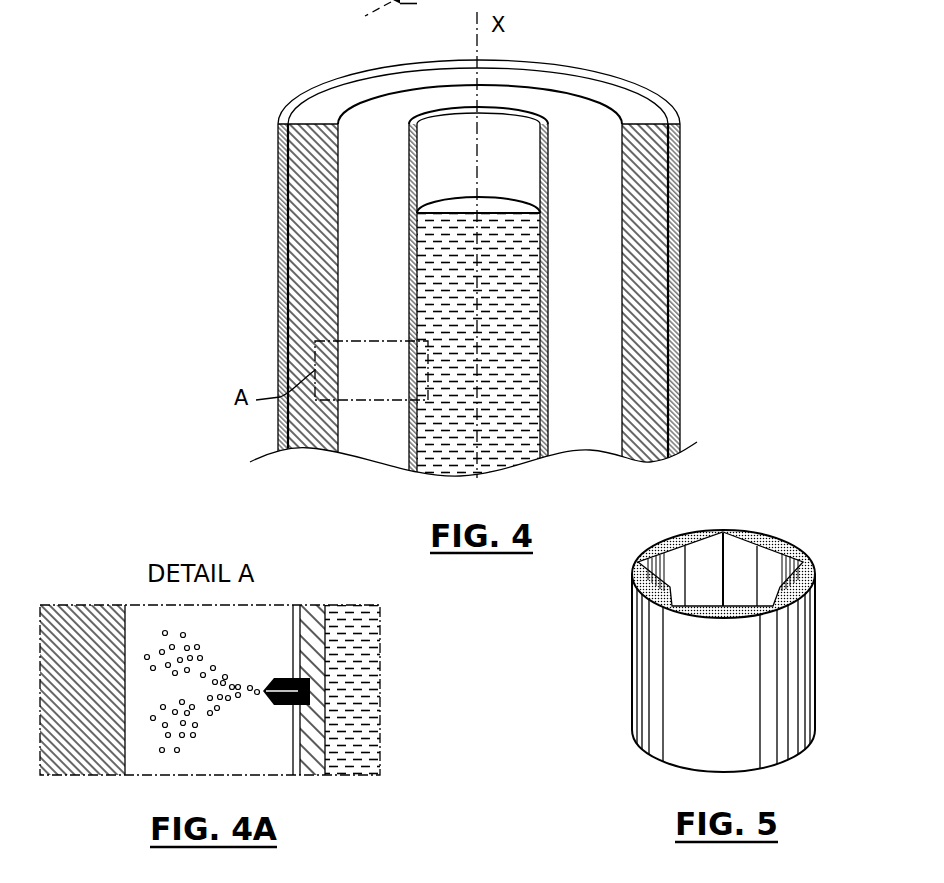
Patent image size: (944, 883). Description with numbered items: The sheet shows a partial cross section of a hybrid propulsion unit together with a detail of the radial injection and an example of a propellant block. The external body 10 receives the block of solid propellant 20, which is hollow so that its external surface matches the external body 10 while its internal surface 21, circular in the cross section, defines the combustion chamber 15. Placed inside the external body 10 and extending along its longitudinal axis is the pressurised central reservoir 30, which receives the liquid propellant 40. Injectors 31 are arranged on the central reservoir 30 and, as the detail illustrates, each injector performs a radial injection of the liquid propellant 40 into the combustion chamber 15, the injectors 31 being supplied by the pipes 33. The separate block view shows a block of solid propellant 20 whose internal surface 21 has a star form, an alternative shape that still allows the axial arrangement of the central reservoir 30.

In FIG. 4, the external body 10 is at (479, 270).
In FIG. 4, the combustion chamber 15 is at (378, 8).
In FIG. 4A, the combustion chamber 15 is at (280, 639).
In FIG. 4, the solid propellant 20 is at (479, 274).
In FIG. 5, the solid propellant 20 is at (632, 660).
In FIG. 4, the internal surface 21 is at (480, 104).
In FIG. 5, the internal surface 21 is at (737, 565).
In FIG. 4, the central reservoir 30 is at (478, 293).
In FIG. 4, the injectors 31 is at (405, 2).
In FIG. 4A, the pipes 33 is at (293, 735).
In FIG. 4, the liquid propellant 40 is at (478, 338).